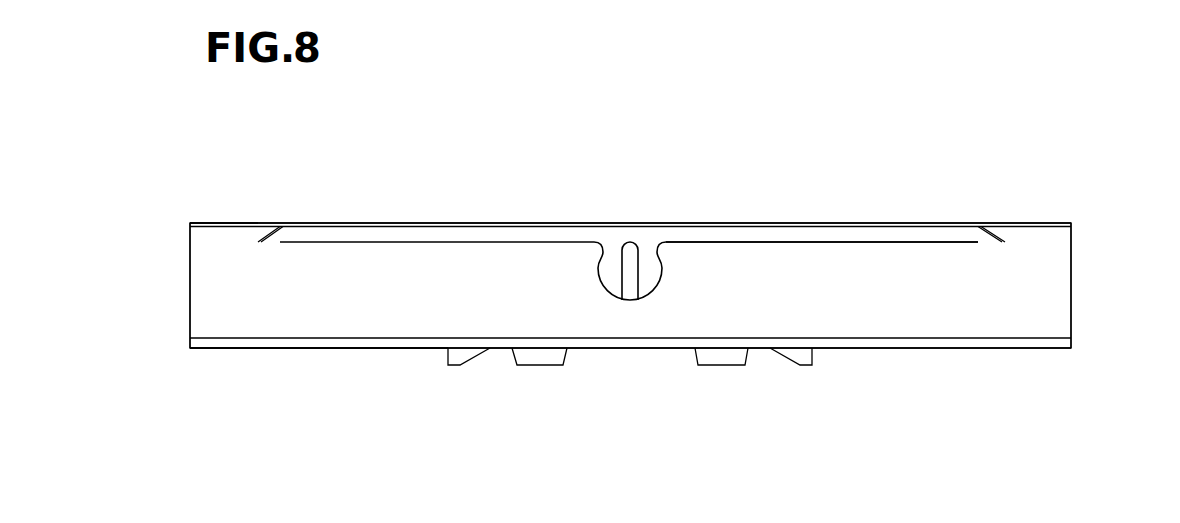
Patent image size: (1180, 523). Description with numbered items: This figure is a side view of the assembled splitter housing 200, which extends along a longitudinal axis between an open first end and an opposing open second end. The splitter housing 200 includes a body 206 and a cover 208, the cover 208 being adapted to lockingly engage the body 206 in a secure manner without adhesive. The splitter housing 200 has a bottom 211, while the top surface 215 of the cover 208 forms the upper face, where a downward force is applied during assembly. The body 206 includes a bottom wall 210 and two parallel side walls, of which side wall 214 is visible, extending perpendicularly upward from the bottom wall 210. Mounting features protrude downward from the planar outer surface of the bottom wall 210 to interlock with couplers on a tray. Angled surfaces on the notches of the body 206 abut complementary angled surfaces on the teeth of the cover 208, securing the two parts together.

The splitter housing 200 is at (897, 148).
The body 206 is at (207, 285).
The cover 208 is at (902, 228).
The bottom wall 210 is at (940, 348).
The bottom 211 is at (250, 348).
The side wall 214 is at (1053, 284).
The top surface 215 is at (227, 223).